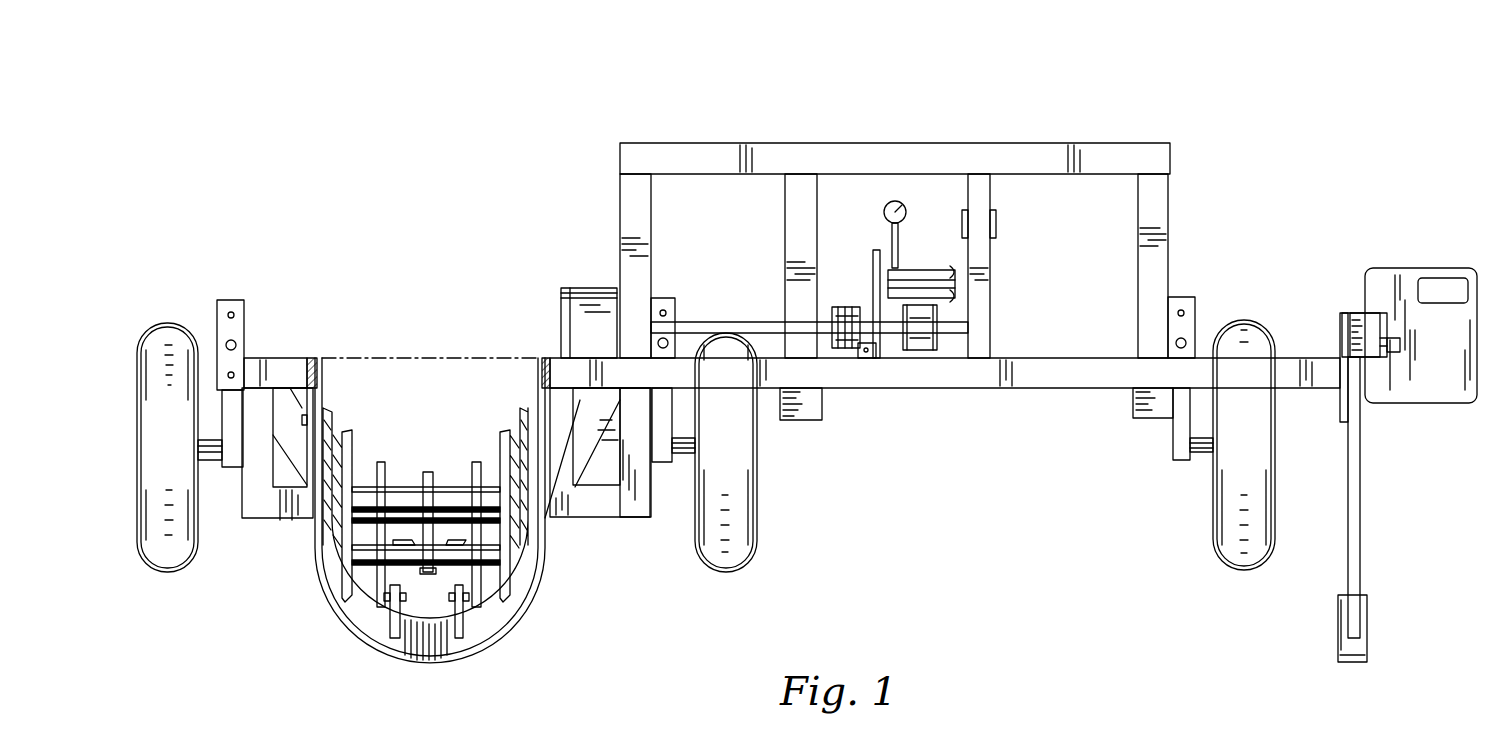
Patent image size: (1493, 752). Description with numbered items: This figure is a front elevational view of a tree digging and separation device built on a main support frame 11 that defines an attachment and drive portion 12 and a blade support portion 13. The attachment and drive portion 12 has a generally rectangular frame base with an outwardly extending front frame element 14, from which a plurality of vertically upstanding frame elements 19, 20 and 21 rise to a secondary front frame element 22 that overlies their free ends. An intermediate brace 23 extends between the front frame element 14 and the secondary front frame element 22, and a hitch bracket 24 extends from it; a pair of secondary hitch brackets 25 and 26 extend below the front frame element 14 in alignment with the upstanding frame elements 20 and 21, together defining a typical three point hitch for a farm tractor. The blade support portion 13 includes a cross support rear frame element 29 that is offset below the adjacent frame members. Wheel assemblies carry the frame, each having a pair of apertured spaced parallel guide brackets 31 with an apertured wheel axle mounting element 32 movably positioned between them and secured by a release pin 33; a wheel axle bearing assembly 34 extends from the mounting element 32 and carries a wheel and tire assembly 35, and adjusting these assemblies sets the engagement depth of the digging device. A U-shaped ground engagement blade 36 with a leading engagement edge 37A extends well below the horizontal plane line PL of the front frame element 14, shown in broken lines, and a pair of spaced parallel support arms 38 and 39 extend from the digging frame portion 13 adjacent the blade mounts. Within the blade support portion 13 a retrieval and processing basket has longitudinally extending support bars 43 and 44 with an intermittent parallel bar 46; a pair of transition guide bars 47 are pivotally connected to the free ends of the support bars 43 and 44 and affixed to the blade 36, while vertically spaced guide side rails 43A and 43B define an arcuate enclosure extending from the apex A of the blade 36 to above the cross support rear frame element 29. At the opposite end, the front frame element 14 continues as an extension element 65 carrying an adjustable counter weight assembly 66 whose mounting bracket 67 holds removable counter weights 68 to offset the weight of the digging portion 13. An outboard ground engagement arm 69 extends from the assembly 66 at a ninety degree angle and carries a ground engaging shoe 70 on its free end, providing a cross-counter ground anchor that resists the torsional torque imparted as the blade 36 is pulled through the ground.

The main support frame 11 is at (982, 112).
The attachment and drive portion 12 is at (931, 227).
The blade support portion 13 is at (396, 491).
The front frame element 14 is at (1037, 372).
The vertically upstanding frame element 19 is at (638, 228).
The vertically upstanding frame element 20 is at (808, 220).
The vertically upstanding frame element 21 is at (1155, 205).
The secondary front frame element 22 is at (683, 160).
The intermediate brace 23 is at (981, 298).
The hitch bracket 24 is at (997, 226).
The secondary hitch bracket 25 is at (822, 405).
The secondary hitch bracket 26 is at (1133, 406).
The cross support rear frame element 29 is at (595, 497).
The apertured guide brackets 31 is at (241, 323).
The wheel axle mounting element 32 is at (658, 418).
The release pin 33 is at (238, 345).
The wheel axle bearing assembly 34 is at (680, 465).
The wheel and tire assembly 35 is at (164, 522).
The ground engagement blade 36 is at (512, 598).
The leading engagement edge 37A is at (485, 648).
The support arm 38 is at (323, 378).
The support arm 39 is at (546, 356).
The support bar 43 is at (383, 461).
The guide side rail 43A is at (350, 572).
The guide side rail 43B is at (327, 524).
The support bar 44 is at (479, 461).
The intermittent parallel bar 46 is at (429, 471).
The transition guide bars 47 is at (397, 626).
The extension element 65 is at (1278, 372).
The adjustable counter weight assembly 66 is at (1443, 266).
The mounting bracket 67 is at (1370, 323).
The counter weights 68 is at (1446, 368).
The outboard ground engagement arm 69 is at (1360, 506).
The ground engaging shoe 70 is at (1368, 645).
The horizontal plane line PL is at (410, 356).
The apex A is at (428, 668).